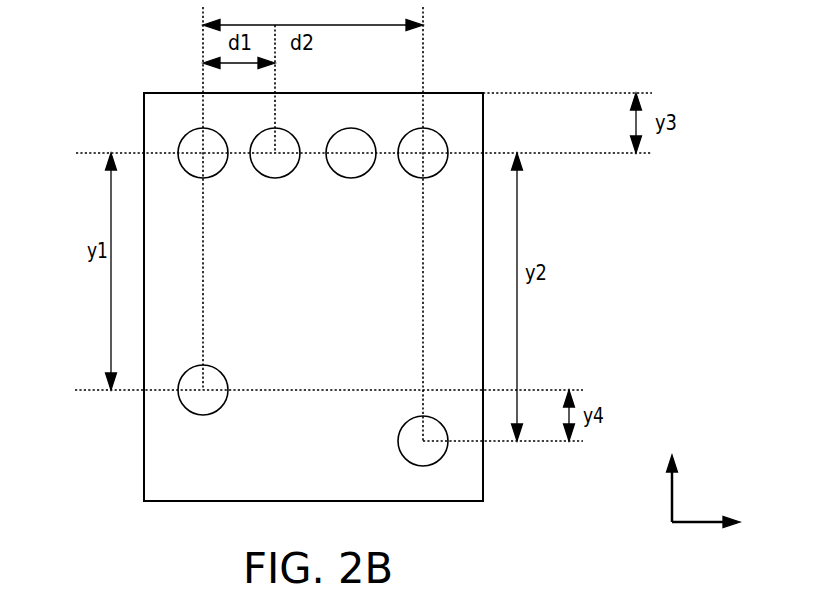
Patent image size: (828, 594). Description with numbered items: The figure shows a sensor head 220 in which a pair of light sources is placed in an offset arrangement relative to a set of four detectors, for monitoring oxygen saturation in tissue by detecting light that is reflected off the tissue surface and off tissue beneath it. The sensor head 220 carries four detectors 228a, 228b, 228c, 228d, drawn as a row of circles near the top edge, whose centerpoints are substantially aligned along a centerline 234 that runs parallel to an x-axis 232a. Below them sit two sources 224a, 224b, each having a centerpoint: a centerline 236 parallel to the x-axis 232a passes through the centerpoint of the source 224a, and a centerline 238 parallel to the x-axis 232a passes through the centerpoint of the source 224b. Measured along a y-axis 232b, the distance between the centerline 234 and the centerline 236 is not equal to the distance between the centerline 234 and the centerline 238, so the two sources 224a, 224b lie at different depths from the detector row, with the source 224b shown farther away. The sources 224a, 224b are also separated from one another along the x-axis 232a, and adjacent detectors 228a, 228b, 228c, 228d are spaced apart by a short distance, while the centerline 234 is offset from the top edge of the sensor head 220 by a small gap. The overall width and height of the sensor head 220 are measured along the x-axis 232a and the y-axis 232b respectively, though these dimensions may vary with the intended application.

The sensor head 220 is at (467, 93).
The source 224a is at (182, 406).
The source 224b is at (444, 458).
The detector 228a is at (181, 142).
The detector 228b is at (278, 128).
The detector 228c is at (350, 128).
The detector 228d is at (448, 142).
The x-axis 232a is at (707, 521).
The y-axis 232b is at (670, 509).
The centerline 234 is at (583, 154).
The centerline 236 is at (84, 389).
The centerline 238 is at (580, 442).